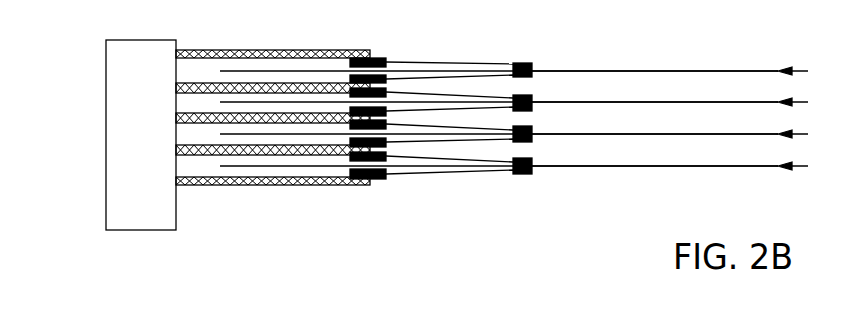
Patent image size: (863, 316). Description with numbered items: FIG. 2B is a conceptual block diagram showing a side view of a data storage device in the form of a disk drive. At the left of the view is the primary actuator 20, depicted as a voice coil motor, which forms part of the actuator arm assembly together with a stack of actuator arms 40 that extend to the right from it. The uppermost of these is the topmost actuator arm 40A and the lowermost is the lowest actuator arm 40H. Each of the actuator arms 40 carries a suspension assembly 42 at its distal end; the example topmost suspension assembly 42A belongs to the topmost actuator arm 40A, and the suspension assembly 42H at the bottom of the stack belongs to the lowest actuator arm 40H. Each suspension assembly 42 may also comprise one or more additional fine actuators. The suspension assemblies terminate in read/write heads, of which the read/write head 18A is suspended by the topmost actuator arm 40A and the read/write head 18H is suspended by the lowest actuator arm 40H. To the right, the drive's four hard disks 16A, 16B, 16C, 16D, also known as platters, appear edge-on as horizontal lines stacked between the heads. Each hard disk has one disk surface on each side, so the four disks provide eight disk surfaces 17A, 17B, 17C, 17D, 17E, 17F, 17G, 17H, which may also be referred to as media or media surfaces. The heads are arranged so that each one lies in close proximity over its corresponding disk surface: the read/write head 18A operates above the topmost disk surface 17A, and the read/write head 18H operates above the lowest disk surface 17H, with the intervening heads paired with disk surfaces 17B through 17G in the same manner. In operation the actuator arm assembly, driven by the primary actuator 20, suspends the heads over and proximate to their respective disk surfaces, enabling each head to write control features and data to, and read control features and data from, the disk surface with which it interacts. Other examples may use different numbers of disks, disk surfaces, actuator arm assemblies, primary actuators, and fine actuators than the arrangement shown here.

The primary actuator 20 is at (106, 76).
The actuator arms 40 is at (273, 136).
The topmost actuator arm 40A is at (292, 50).
The lowest actuator arm 40H is at (242, 186).
The suspension assembly 42 is at (446, 139).
The topmost suspension assembly 42A is at (470, 50).
The lowest suspension assembly 42H is at (470, 186).
The read/write head 18A is at (538, 60).
The read/write head 18H is at (539, 177).
The hard disk 16A is at (531, 72).
The hard disk 16B is at (531, 103).
The hard disk 16C is at (531, 135).
The hard disk 16D is at (532, 167).
The disk surface 17A is at (687, 71).
The disk surface 17B is at (674, 71).
The disk surface 17C is at (687, 102).
The disk surface 17D is at (674, 102).
The disk surface 17E is at (657, 134).
The disk surface 17F is at (657, 134).
The disk surface 17G is at (673, 166).
The disk surface 17H is at (657, 166).